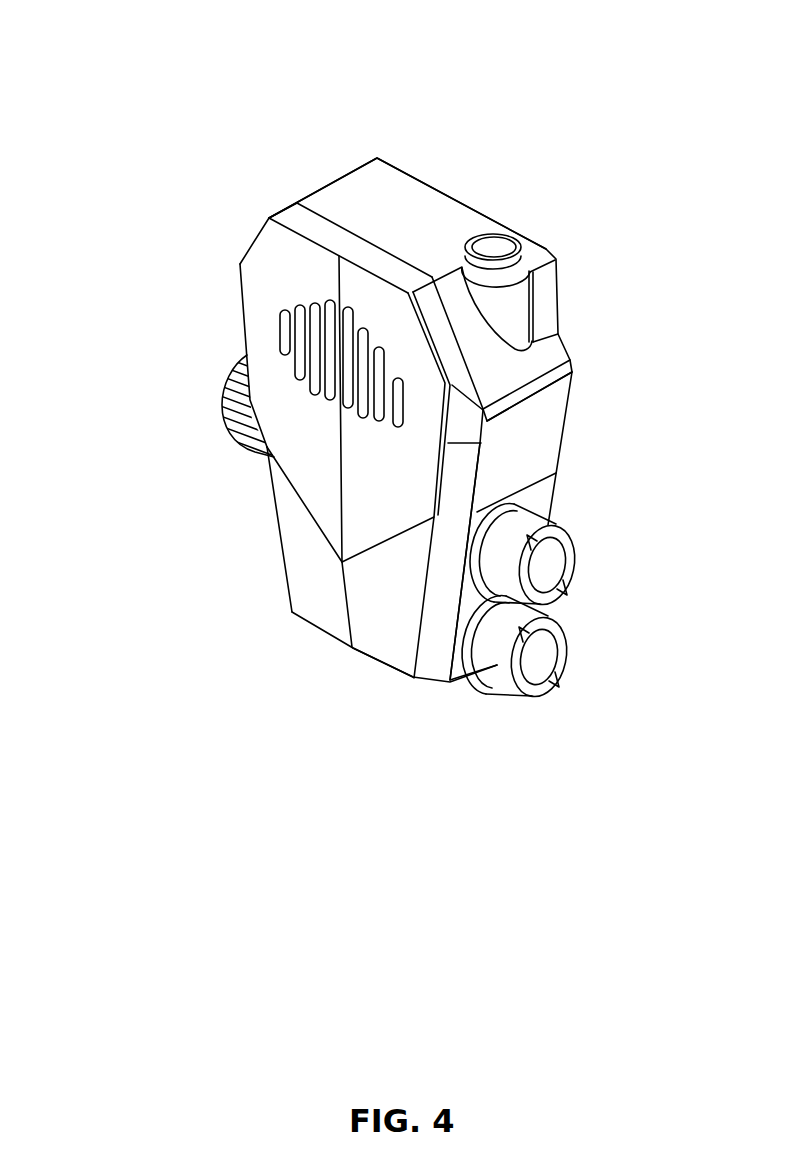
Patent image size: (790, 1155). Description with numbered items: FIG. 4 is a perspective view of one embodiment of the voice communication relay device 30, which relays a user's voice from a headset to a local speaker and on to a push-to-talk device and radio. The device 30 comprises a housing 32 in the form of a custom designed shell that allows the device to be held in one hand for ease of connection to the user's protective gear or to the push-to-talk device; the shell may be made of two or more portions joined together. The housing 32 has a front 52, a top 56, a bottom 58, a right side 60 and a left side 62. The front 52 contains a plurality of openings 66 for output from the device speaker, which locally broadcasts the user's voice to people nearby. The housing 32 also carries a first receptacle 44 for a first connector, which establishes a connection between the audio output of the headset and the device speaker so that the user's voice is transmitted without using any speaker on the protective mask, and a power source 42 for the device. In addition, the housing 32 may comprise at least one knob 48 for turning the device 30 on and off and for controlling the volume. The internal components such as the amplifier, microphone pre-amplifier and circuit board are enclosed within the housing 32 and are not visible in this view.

The voice communication relay device 30 is at (566, 311).
The housing 32 is at (580, 418).
The power source 42 is at (574, 655).
The first receptacle 44 is at (495, 248).
The knob 48 is at (226, 419).
The front 52 is at (318, 579).
The top 56 is at (383, 210).
The bottom 58 is at (365, 655).
The right side 60 is at (510, 447).
The left side 62 is at (275, 514).
The openings 66 is at (277, 335).